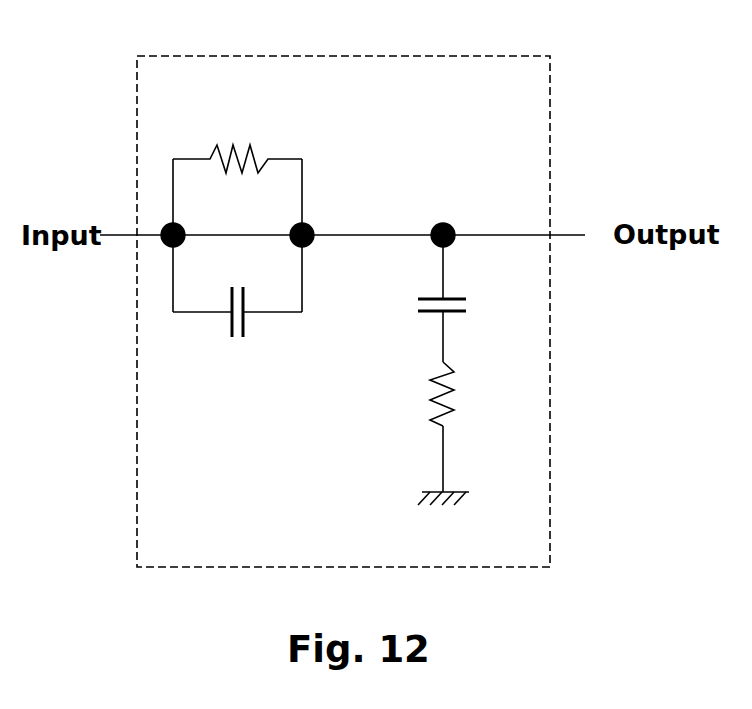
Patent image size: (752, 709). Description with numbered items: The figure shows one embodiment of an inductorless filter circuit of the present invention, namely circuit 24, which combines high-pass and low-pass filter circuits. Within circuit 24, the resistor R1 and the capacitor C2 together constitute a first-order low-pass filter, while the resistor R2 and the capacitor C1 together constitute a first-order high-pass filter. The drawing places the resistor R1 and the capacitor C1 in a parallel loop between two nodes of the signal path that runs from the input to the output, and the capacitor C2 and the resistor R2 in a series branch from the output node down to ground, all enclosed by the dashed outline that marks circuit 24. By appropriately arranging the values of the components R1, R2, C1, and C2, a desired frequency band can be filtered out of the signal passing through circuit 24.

The circuit 24 is at (137, 128).
The resistor R1 is at (237, 133).
The capacitor C1 is at (237, 335).
The capacitor C2 is at (470, 298).
The resistor R2 is at (477, 427).